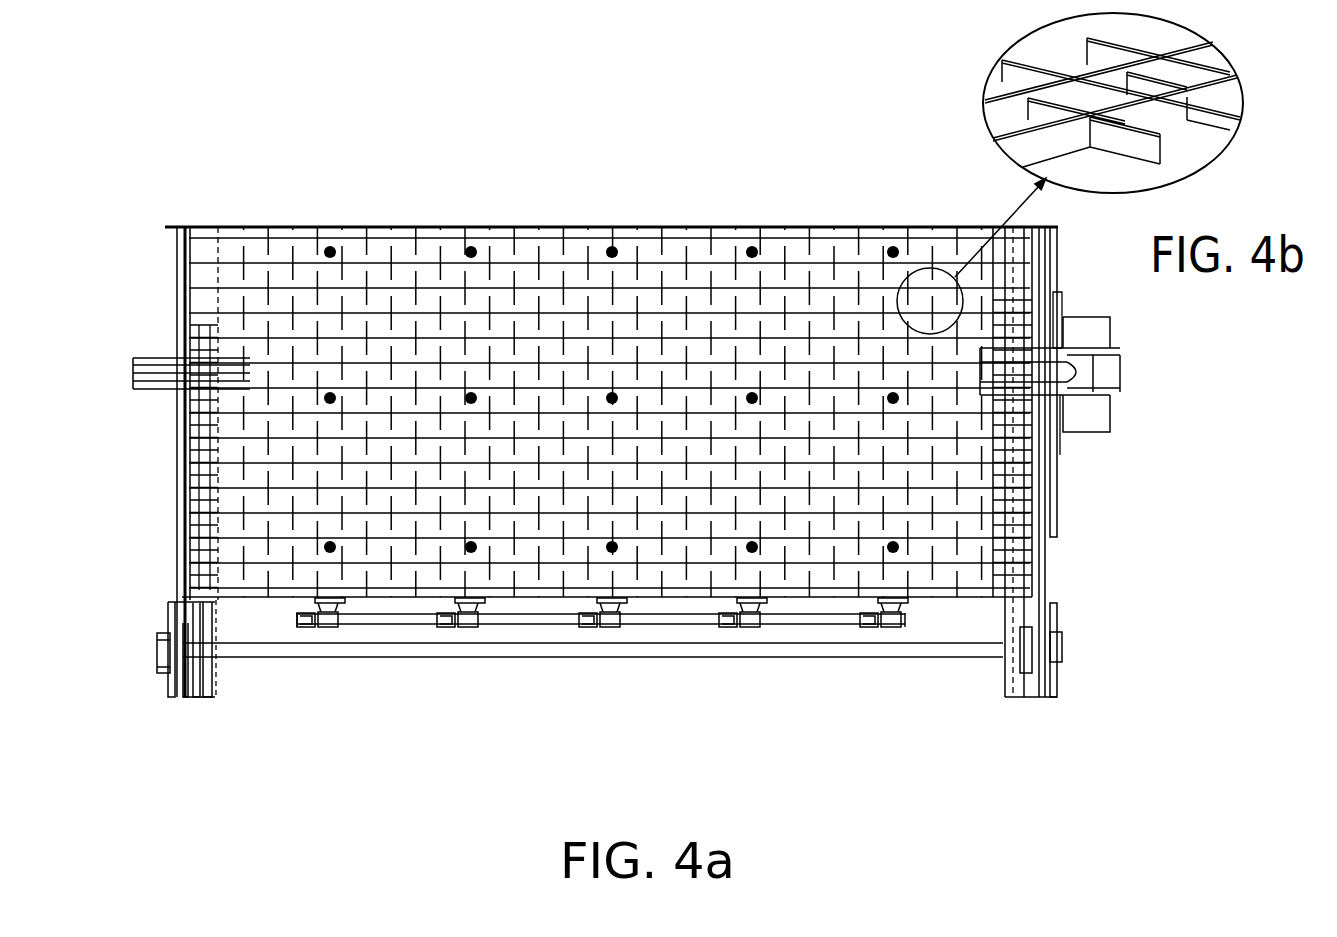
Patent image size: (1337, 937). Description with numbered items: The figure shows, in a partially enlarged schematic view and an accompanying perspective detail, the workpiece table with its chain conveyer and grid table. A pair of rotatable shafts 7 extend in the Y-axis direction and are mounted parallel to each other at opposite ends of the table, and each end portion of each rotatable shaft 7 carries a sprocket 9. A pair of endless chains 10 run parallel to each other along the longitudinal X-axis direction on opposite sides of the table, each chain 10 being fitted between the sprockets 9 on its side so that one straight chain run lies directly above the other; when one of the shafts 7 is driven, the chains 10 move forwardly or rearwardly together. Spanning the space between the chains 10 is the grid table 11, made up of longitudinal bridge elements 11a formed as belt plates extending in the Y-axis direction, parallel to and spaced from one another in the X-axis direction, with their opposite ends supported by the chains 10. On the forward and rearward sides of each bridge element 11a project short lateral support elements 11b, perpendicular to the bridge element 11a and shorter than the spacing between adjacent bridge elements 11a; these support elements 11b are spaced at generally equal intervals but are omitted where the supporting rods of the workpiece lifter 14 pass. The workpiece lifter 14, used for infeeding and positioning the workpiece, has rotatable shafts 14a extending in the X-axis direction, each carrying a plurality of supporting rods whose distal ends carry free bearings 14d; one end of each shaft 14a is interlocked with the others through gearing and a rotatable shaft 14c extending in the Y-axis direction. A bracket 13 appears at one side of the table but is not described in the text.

In FIG. 4A, the rotatable shaft 7 is at (763, 648).
In FIG. 4A, the sprocket 9 is at (212, 683).
In FIG. 4A, the endless chain 10 is at (215, 585).
In FIG. 4A, the grid table 11 is at (607, 367).
In FIG. 4A, the longitudinal bridge element 11a is at (652, 287).
In FIG. 4B, the longitudinal bridge element 11a is at (1167, 118).
In FIG. 4A, the lateral support element 11b is at (707, 180).
In FIG. 4B, the lateral support element 11b is at (1127, 147).
In FIG. 4A, the drive bracket 13 is at (1110, 367).
In FIG. 4A, the workpiece lifter 14 is at (602, 665).
In FIG. 4A, the rotatable shaft 14a is at (567, 688).
In FIG. 4A, the rotatable shaft 14c is at (528, 627).
In FIG. 4A, the free bearing 14d is at (470, 252).